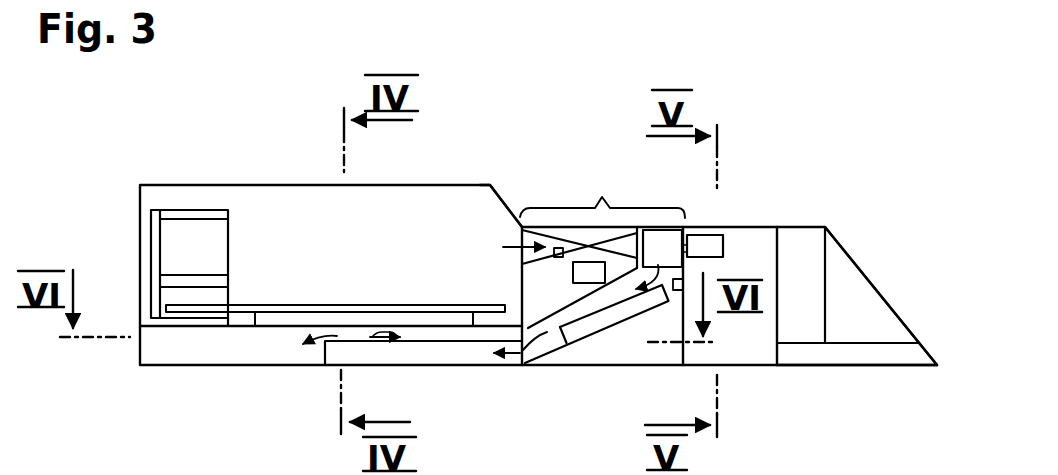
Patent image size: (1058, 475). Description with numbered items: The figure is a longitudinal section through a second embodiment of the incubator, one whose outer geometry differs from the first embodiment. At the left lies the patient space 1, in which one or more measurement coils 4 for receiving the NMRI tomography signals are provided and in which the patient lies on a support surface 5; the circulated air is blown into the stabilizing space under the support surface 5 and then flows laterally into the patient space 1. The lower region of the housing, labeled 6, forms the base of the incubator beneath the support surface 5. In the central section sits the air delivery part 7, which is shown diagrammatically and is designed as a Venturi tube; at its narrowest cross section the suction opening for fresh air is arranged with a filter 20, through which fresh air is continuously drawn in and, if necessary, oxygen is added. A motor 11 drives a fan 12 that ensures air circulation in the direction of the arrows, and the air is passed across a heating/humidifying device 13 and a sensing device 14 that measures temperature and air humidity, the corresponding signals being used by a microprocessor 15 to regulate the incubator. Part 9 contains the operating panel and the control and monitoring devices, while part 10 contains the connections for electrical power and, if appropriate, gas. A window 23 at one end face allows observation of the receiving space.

The patient space 1 is at (180, 183).
The measurement coils 4 is at (155, 237).
The support surface 5 is at (255, 318).
The base 6 is at (183, 350).
The air delivery part 7 is at (594, 255).
The part containing the operating panel 9 is at (857, 256).
The part containing the connections 10 is at (883, 366).
The motor 11 is at (715, 243).
The fan 12 is at (667, 242).
The heating/humidifying device 13 is at (575, 331).
The sensing device 14 is at (558, 248).
The microprocessor 15 is at (803, 240).
The filter 20 is at (605, 278).
The additional window 23 is at (503, 186).